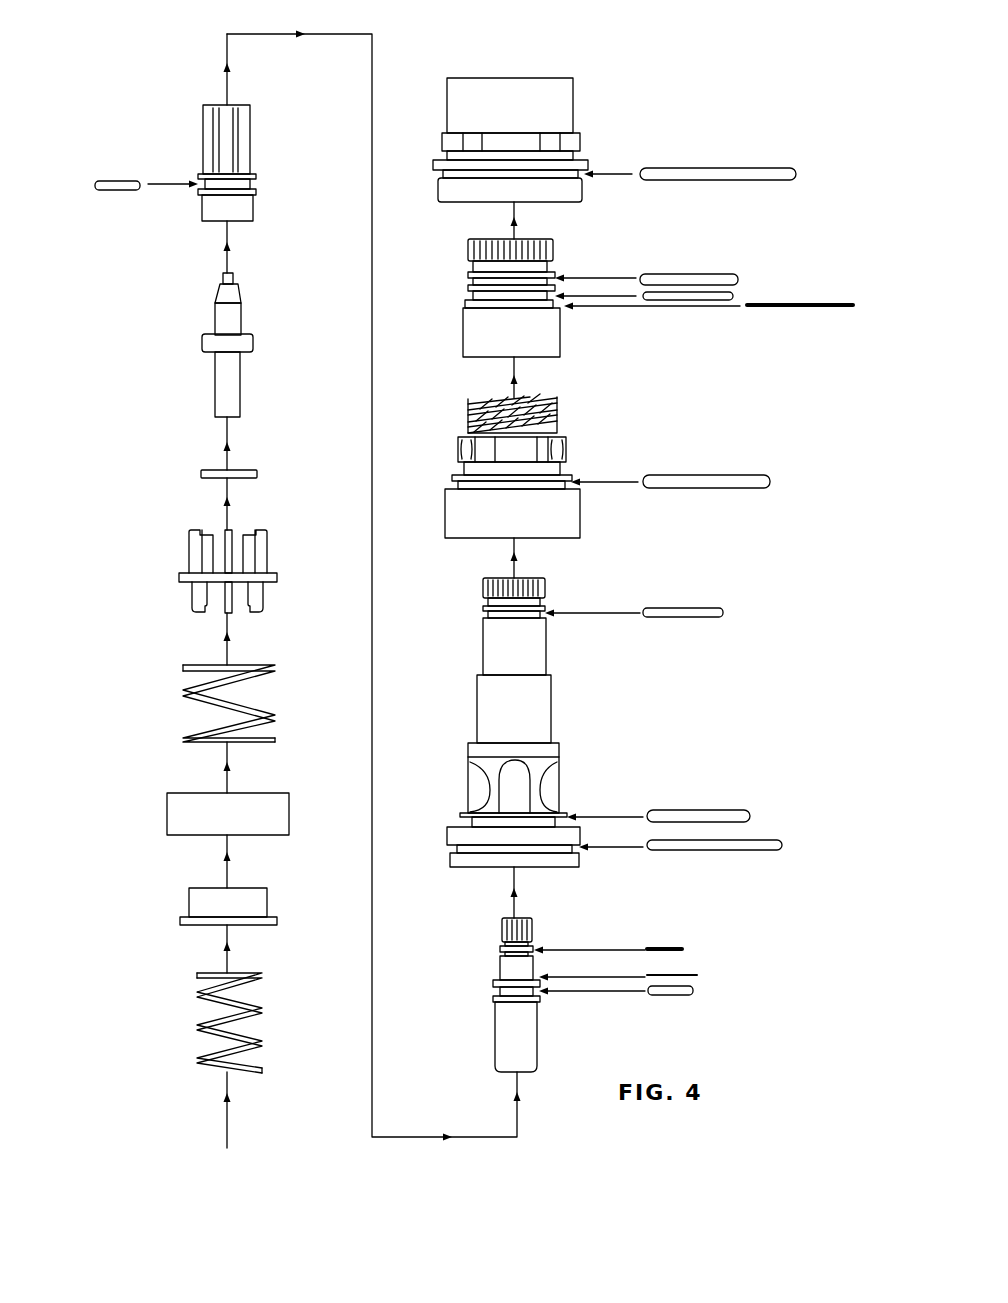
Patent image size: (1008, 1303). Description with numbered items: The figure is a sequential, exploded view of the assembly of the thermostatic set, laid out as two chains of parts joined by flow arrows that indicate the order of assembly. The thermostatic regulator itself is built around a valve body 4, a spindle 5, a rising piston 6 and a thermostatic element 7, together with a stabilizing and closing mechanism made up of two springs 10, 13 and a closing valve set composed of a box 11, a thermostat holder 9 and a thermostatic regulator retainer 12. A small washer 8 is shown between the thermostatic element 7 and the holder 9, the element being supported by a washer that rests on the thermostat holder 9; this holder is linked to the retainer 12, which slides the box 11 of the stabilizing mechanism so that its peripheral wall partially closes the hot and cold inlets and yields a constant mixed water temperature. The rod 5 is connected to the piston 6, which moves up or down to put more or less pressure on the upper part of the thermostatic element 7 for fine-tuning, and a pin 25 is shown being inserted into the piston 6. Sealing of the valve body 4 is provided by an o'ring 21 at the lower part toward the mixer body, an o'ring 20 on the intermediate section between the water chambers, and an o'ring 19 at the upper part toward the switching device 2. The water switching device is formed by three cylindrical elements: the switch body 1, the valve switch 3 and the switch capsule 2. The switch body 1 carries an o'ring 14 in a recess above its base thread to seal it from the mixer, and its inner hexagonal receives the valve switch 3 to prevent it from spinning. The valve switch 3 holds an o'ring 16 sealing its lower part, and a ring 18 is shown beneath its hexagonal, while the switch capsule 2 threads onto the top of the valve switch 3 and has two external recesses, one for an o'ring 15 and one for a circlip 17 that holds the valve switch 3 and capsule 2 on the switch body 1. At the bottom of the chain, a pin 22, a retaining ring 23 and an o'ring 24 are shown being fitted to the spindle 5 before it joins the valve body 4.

The switch body 1 is at (485, 118).
The switch capsule 2 is at (493, 323).
The valve switch 3 is at (490, 510).
The valve body 4 is at (508, 719).
The spindle 5 is at (515, 1027).
The rising piston 6 is at (240, 198).
The thermostatic element 7 is at (232, 385).
The washer disc 8 is at (257, 473).
The thermostat holder 9 is at (277, 575).
The spring 10 is at (255, 702).
The box 11 is at (257, 813).
The thermostatic regulator retainer 12 is at (243, 903).
The spring 13 is at (262, 1035).
The o'ring 14 is at (796, 173).
The o'ring 15 is at (738, 280).
The o'ring 16 is at (733, 292).
The circlip 17 is at (853, 301).
The O-ring seal 18 is at (770, 479).
The o'ring 19 is at (723, 610).
The o'ring 20 is at (750, 817).
The o'ring 21 is at (782, 844).
The retaining pin 22 is at (682, 948).
The retaining ring 23 is at (697, 973).
The O-ring seal 24 is at (693, 990).
The pin 25 is at (95, 184).